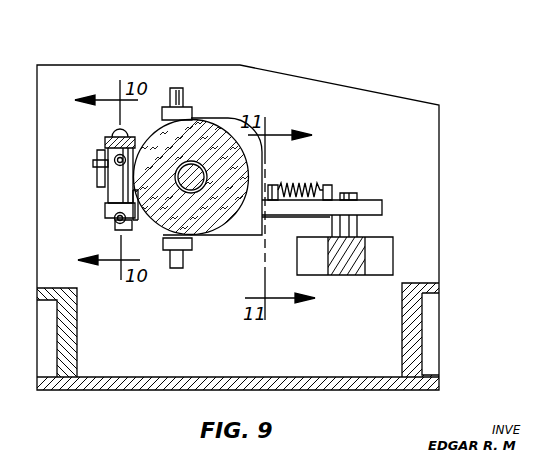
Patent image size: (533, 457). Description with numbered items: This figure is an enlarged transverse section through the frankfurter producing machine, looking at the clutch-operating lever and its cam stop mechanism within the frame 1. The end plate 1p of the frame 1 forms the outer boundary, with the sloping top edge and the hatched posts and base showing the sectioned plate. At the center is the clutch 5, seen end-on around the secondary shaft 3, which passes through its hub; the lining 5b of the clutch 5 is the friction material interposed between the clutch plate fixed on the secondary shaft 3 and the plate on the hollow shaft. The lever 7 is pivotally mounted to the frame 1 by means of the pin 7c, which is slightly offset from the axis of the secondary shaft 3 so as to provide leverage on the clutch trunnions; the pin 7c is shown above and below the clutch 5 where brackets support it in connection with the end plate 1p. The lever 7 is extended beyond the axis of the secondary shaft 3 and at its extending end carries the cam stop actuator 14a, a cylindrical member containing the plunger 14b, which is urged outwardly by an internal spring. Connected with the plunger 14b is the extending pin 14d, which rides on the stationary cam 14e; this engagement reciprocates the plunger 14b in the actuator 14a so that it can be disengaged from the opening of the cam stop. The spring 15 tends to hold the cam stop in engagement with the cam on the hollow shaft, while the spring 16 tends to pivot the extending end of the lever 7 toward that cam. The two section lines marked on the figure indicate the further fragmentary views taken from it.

The frame 1 is at (420, 333).
The end plate 1p is at (352, 88).
The secondary shaft 3 is at (190, 183).
The clutch 5 is at (218, 123).
The lining 5b is at (200, 118).
The lever 7 is at (140, 213).
The pin 7c is at (175, 88).
The cam stop actuator 14a is at (117, 192).
The plunger 14b is at (115, 228).
The extending pin 14d is at (93, 160).
The stationary cam 14e is at (100, 138).
The spring 15 is at (104, 149).
The spring 16 is at (108, 214).